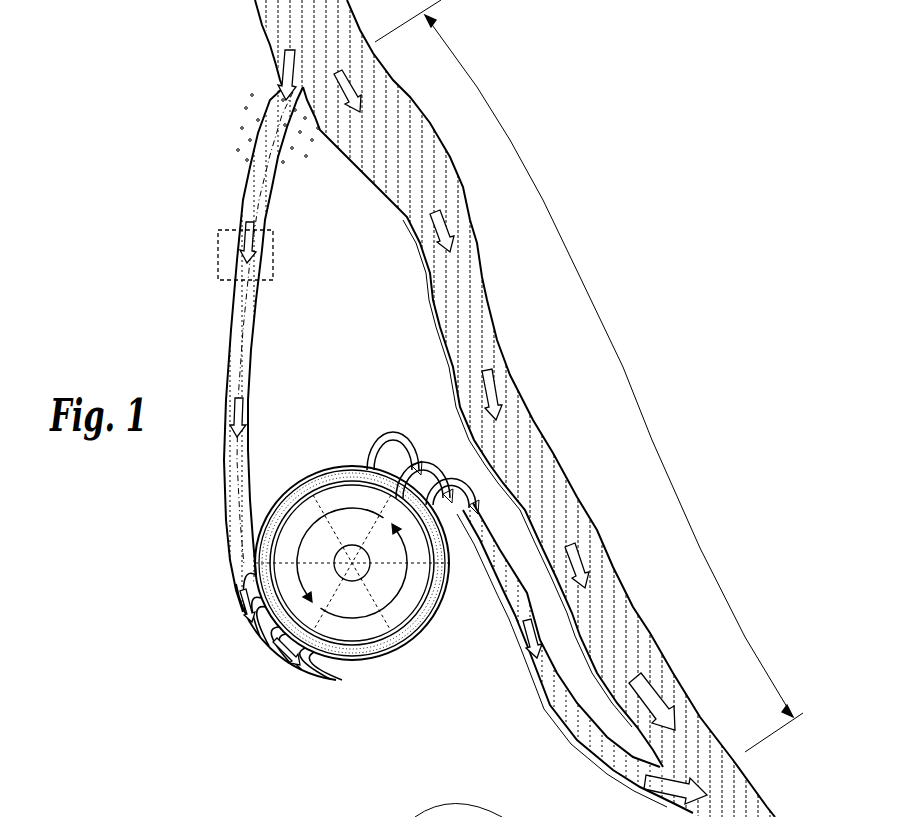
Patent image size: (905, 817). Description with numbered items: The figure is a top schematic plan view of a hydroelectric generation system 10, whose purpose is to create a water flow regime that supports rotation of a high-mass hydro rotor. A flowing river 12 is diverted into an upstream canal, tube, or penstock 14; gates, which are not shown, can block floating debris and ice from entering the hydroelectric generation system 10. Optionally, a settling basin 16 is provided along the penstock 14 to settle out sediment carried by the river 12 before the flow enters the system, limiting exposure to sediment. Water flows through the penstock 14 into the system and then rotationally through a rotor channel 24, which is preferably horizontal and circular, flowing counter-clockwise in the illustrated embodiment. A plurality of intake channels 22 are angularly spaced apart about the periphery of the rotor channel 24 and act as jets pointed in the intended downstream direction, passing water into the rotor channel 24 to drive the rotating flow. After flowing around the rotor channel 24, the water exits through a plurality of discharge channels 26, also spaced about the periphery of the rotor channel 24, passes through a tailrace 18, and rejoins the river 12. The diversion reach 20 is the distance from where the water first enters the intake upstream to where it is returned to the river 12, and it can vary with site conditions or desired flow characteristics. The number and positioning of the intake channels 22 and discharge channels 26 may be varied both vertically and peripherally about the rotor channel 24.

The hydroelectric generation system 10 is at (438, 633).
The river 12 is at (475, 236).
The penstock 14 is at (258, 138).
The settling basin 16 is at (216, 260).
The tailrace 18 is at (548, 690).
The diversion reach 20 is at (589, 376).
The intake channels 22 is at (300, 672).
The rotor channel 24 is at (323, 470).
The discharge channels 26 is at (395, 478).